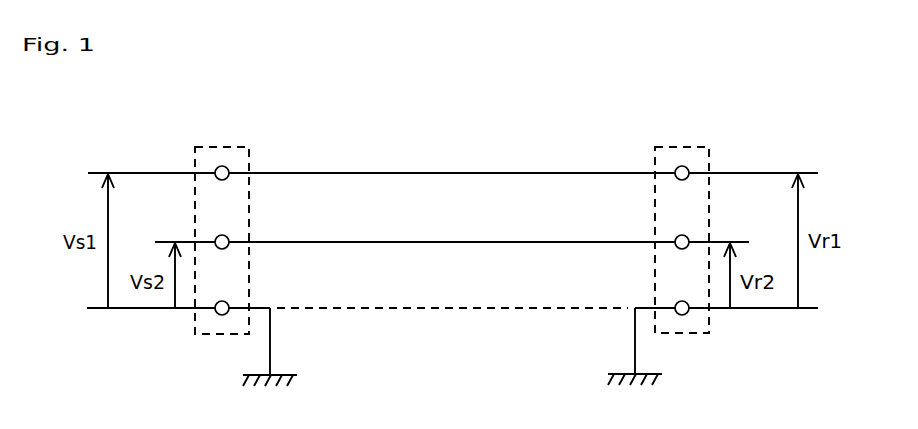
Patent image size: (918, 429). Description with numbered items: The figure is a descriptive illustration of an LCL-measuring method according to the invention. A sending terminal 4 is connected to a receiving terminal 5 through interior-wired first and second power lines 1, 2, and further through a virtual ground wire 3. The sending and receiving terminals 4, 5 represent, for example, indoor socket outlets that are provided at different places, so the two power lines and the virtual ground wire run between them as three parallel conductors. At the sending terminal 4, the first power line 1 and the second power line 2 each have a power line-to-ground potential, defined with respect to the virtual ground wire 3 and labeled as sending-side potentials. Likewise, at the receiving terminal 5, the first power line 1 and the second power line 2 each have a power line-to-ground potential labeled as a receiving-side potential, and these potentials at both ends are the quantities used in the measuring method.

The first power line 1 is at (297, 173).
The second power line 2 is at (297, 242).
The virtual ground wire 3 is at (297, 308).
The sending terminal 4 is at (230, 145).
The receiving terminal 5 is at (690, 144).